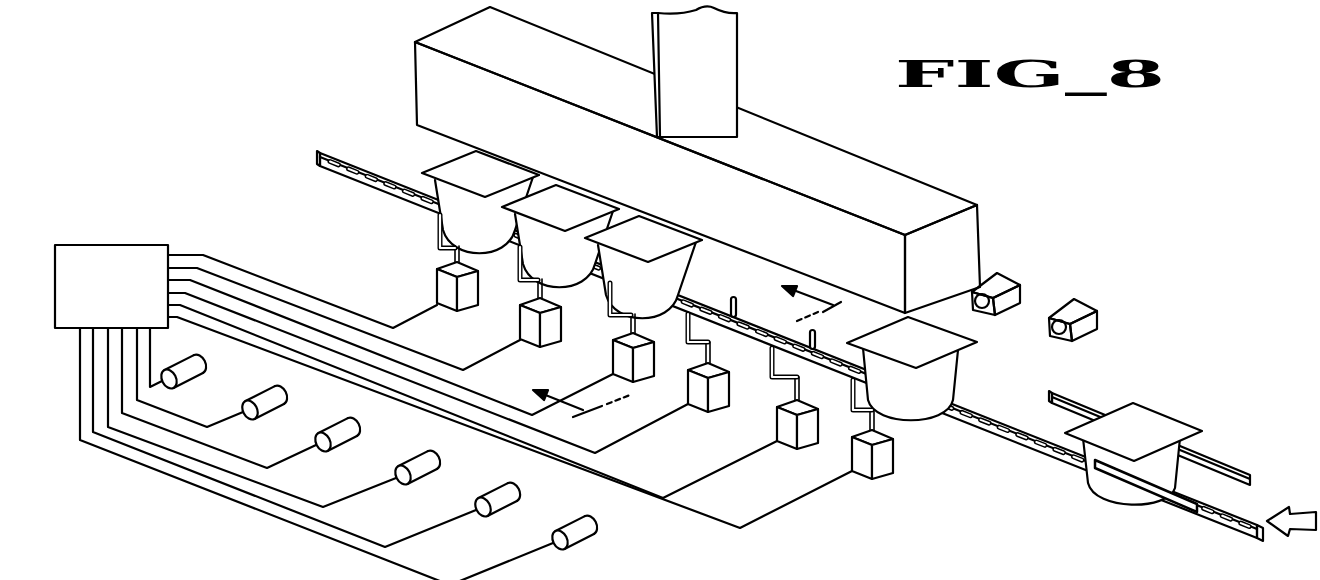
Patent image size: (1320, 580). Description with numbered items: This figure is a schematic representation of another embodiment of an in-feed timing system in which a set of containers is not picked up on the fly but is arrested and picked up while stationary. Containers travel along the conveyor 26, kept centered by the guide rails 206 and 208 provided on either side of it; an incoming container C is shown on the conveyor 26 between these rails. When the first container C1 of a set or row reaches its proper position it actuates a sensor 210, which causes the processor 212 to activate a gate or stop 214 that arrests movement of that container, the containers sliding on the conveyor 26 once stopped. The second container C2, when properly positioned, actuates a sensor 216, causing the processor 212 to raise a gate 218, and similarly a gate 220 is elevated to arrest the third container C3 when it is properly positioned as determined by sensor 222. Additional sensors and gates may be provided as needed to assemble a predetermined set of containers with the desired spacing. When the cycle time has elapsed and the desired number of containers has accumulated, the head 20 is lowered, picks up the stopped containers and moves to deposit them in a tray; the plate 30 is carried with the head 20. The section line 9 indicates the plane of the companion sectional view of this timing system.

The head 20 is at (890, 178).
The plate 30 is at (728, 60).
The conveyor 26 is at (1218, 530).
The guide rail 208 is at (1213, 460).
The guide rail 206 is at (1143, 488).
The processor 212 is at (136, 297).
The gate or stop 214 is at (435, 233).
The gate 218 is at (520, 287).
The gate 220 is at (605, 320).
The sensor 210 is at (205, 367).
The sensor 216 is at (285, 400).
The sensor 222 is at (362, 430).
The first container C1 is at (483, 170).
The second container C2 is at (570, 202).
The third container C3 is at (653, 240).
The container C is at (1100, 487).
The section line 9- 9 is at (691, 364).